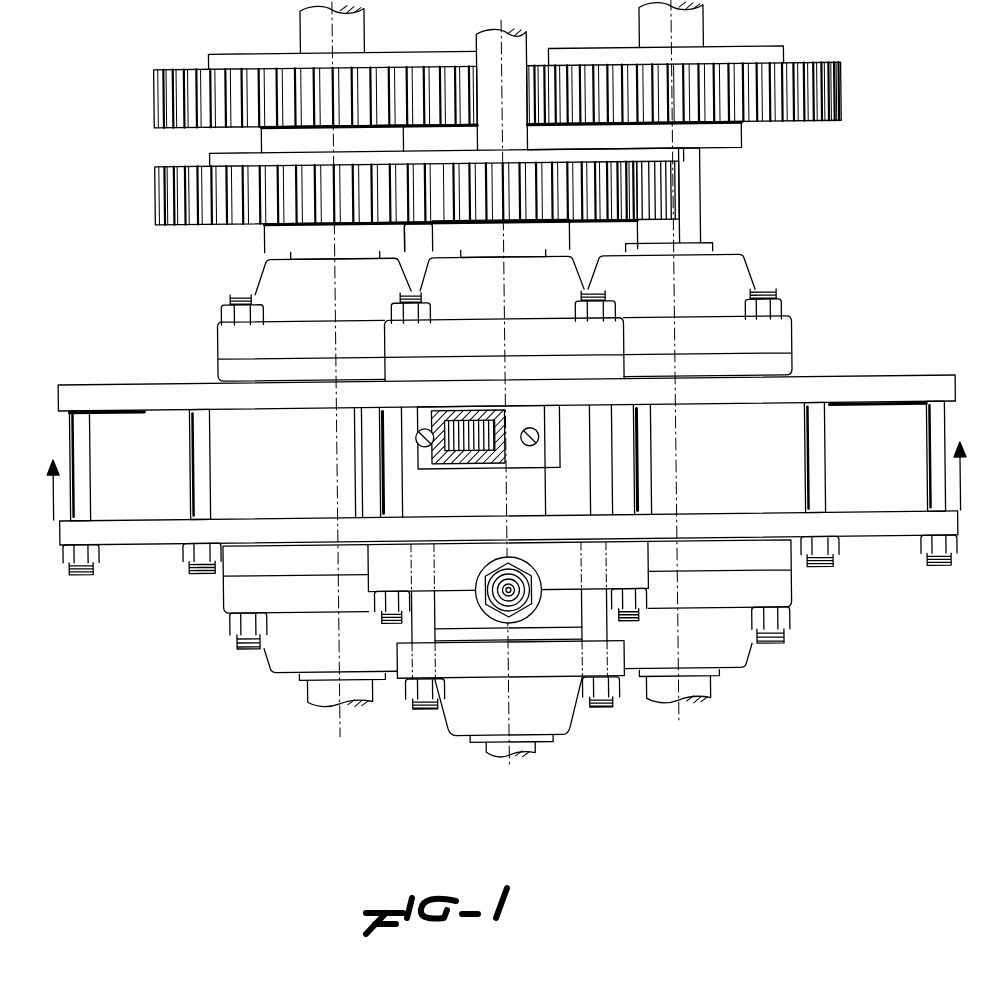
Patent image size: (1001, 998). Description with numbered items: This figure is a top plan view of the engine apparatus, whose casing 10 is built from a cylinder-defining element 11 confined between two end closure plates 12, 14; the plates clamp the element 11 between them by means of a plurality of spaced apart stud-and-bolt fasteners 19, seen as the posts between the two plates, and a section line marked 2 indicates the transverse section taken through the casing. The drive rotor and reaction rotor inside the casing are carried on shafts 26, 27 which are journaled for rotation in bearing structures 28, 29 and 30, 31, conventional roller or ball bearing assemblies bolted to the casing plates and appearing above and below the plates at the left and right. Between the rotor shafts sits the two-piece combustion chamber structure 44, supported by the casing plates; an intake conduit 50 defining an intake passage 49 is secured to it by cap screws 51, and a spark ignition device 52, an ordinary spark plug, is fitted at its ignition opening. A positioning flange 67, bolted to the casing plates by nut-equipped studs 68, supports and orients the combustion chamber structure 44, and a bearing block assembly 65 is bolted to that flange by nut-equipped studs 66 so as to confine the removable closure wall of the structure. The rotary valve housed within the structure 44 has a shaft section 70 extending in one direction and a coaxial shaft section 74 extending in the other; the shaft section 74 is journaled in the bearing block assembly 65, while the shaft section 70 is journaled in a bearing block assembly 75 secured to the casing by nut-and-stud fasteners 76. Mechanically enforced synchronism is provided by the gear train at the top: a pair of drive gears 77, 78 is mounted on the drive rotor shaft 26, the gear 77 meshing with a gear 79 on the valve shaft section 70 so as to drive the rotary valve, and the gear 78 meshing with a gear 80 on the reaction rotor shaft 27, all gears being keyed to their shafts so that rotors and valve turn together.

The section line 2- 2 is at (66, 442).
The casing 10 is at (98, 385).
The cylinder-defining element 11 is at (133, 430).
The end closure plate 12 is at (133, 545).
The end closure plate 14 is at (180, 395).
The stud-and-bolt fasteners 19 is at (90, 497).
The shaft 26 is at (302, 30).
The shaft 27 is at (700, 26).
The bearing structure 28 is at (262, 660).
The bearing structure 29 is at (268, 275).
The bearing structure 30 is at (748, 655).
The bearing structure 31 is at (745, 272).
The combustion chamber structure 44 is at (430, 487).
The intake passage 49 is at (462, 470).
The intake conduit 50 is at (480, 466).
The cap screws 51 is at (530, 447).
The spark ignition device 52 is at (497, 612).
The bearing block assembly 65 is at (446, 730).
The nut-equipped studs 66 is at (408, 708).
The positioning flange 67 is at (565, 590).
The nut-equipped studs 68 is at (385, 625).
The shaft section 70 is at (478, 38).
The shaft section 74 is at (493, 755).
The bearing block assembly 75 is at (493, 310).
The nut-and-stud fasteners 76 is at (410, 292).
The drive gear 77 is at (158, 200).
The drive gear 78 is at (158, 95).
The gear 79 is at (682, 190).
The gear 80 is at (845, 85).